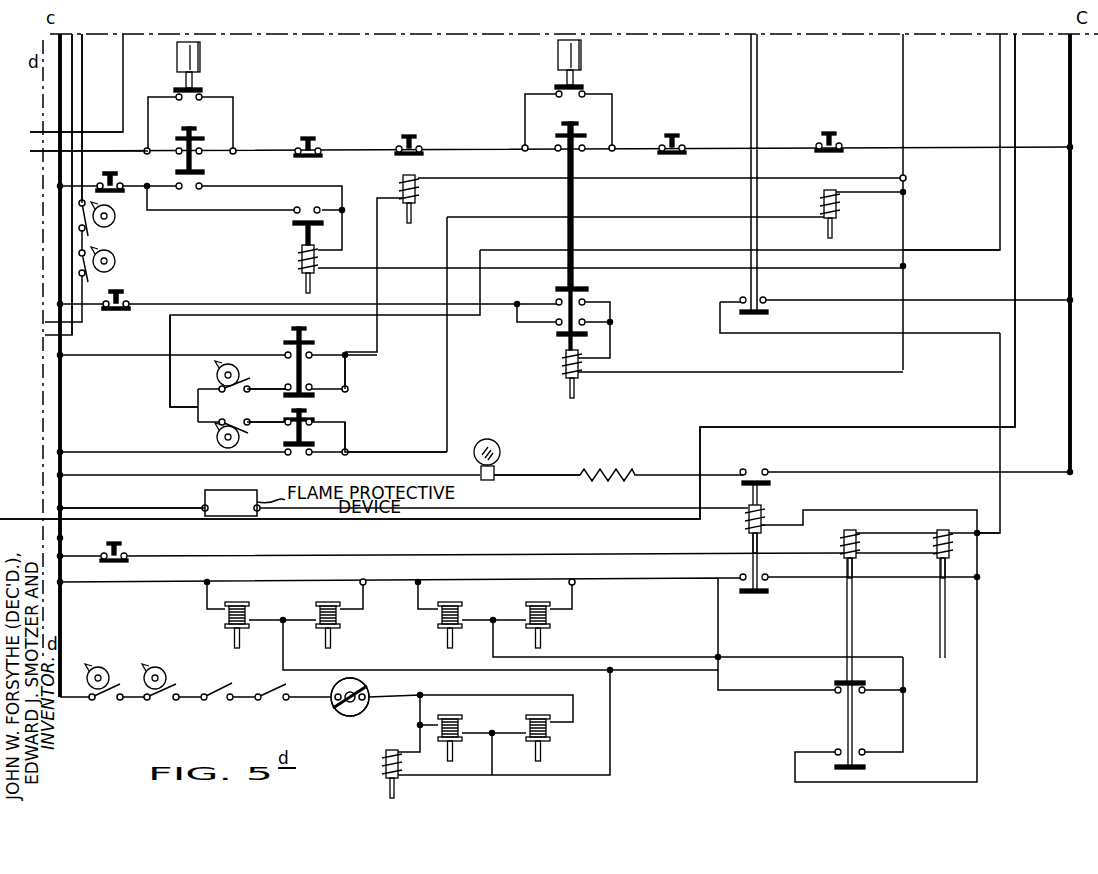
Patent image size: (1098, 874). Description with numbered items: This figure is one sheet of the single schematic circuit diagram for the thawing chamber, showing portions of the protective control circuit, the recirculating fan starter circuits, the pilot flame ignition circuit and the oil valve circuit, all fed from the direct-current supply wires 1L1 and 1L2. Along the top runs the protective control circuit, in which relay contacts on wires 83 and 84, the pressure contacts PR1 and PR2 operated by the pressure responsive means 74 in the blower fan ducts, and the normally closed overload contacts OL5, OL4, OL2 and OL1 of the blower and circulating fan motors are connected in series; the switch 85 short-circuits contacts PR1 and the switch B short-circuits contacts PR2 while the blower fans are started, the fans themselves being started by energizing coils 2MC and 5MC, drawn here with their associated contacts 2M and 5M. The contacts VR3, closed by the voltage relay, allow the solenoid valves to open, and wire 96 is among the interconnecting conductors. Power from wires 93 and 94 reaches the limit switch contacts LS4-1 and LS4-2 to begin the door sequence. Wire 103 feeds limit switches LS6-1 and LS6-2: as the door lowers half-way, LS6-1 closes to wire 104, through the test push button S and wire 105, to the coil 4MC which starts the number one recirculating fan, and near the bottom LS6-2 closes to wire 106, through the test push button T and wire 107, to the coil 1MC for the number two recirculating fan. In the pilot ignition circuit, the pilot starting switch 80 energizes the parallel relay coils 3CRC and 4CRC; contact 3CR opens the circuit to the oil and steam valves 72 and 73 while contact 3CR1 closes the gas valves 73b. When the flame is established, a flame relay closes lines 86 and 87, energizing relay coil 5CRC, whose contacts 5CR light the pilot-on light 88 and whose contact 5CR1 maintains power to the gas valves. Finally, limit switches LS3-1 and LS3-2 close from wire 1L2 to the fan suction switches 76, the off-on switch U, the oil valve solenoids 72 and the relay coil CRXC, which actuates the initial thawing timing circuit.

The wire 93 is at (82, 58).
The wire 94 is at (72, 85).
The wire 83 is at (107, 132).
The pressure responsive means 74 is at (176, 58).
The contacts PR1 is at (207, 90).
The contacts PR2 is at (589, 90).
The overload contacts OL5 is at (326, 138).
The overload contacts OL4 is at (426, 139).
The overload contacts OL2 is at (690, 128).
The overload contacts OL1 is at (806, 142).
The conductor line 96 is at (1015, 110).
The wire 84 is at (130, 151).
The switch 85 is at (204, 157).
The switch B is at (586, 154).
The coil 4MC is at (424, 188).
The coil 1MC is at (838, 207).
The supply wire 1L1 is at (1070, 225).
The limit switch contacts LS4-2 is at (116, 222).
The limit switch contacts LS4-1 is at (116, 262).
The contact 2M is at (288, 219).
The coil 2MC is at (294, 260).
The contacts VR3 is at (767, 302).
The limit switch LS6-1 is at (256, 368).
The limit switch LS6-2 is at (214, 433).
The wire 104 is at (269, 388).
The wire 103 is at (174, 398).
The wire 106 is at (268, 421).
The test push button S is at (315, 372).
The wire 105 is at (348, 378).
The test push button T is at (316, 436).
The wire 107 is at (357, 442).
The contact 5M is at (556, 330).
The coil 5MC is at (559, 365).
The pilot on light 88 is at (487, 438).
The line 86 is at (126, 509).
The line 87 is at (550, 508).
The contacts 5CR is at (750, 466).
The relay coil 5CRC is at (768, 510).
The contact 5CR1 is at (772, 590).
The relay coil 3CRC is at (842, 549).
The relay coil 4CRC is at (916, 528).
The contact 3CR is at (830, 698).
The contact 3CR1 is at (836, 752).
The supply wire 1L2 is at (60, 101).
The pilot starting switch 80 is at (140, 555).
The solenoid-operated steam valves 73 is at (310, 606).
The solenoid-operated gas valves 73b is at (530, 606).
The solenoid-operated oil valves 72 is at (524, 726).
The fan suction switches 76 is at (264, 682).
The limit switch LS3-2 is at (108, 706).
The limit switch LS3-1 is at (158, 697).
The manually operated off-on switch U is at (366, 706).
The relay coil CRXC is at (386, 757).